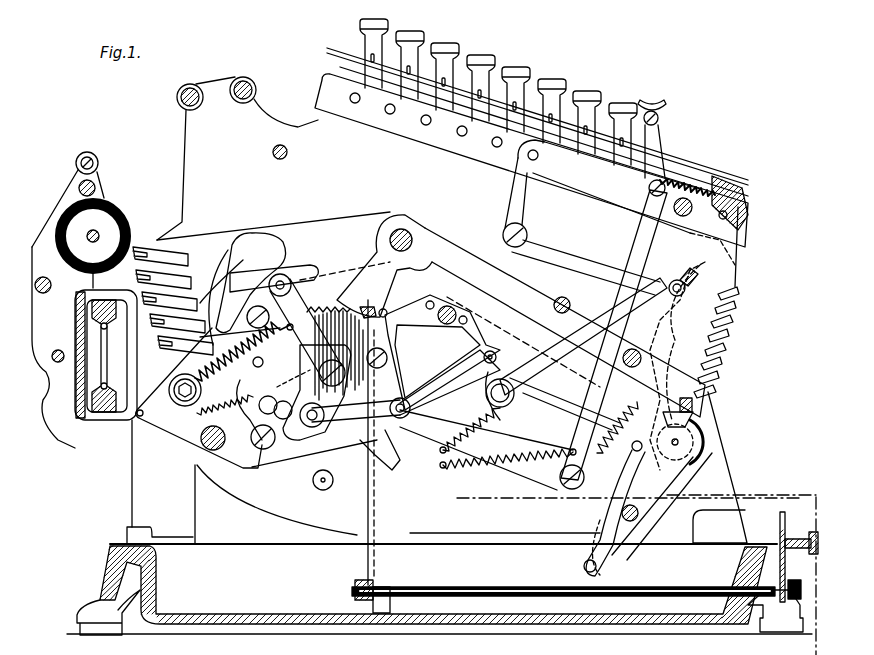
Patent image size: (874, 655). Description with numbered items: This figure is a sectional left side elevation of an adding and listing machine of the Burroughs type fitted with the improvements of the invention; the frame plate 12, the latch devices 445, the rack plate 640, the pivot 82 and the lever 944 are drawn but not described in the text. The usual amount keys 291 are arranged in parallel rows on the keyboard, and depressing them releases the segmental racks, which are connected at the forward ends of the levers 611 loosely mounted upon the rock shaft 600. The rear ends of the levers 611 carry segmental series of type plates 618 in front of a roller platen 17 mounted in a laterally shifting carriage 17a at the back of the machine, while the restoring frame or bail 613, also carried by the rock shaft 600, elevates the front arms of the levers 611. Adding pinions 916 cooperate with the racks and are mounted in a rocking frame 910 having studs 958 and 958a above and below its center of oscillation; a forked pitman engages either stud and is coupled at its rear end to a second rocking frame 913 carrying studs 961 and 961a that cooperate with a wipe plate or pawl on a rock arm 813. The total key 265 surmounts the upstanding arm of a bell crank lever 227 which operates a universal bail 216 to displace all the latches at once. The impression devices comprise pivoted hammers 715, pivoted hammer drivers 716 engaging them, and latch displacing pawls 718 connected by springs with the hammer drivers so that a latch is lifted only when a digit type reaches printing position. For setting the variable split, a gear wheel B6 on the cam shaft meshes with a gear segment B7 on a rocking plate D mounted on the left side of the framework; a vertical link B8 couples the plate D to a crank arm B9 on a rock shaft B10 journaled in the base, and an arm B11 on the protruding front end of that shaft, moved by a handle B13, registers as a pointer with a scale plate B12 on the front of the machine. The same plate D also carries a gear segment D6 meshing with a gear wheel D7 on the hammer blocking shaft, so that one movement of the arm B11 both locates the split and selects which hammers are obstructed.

The keyboard bar / frame plate 12 is at (375, 212).
The roller platen 17 is at (112, 210).
The laterally shifting carriage 17a is at (75, 400).
The pivot 82 is at (492, 380).
The universal bail 216 is at (594, 258).
The bell crank lever 227 is at (533, 190).
The total key 265 is at (658, 112).
The amount keys 291 is at (590, 97).
The rack segment 445 is at (741, 216).
The rock shaft 600 is at (392, 214).
The levers 611 is at (318, 222).
The restoring frame or bail 613 is at (543, 390).
The type plates 618 is at (146, 250).
The rack plate 640 is at (735, 260).
The hammers 715 is at (286, 262).
The hammer drivers 716 is at (293, 458).
The latch displacing pawls 718 is at (308, 274).
The rock arm 813 is at (453, 470).
The rocking frame 910 is at (663, 478).
The rocking frame 913 is at (425, 393).
The adding pinions 916 is at (703, 424).
The lever 944 is at (620, 343).
The stud 958 is at (637, 450).
The stud 958a is at (597, 567).
The stud 961 is at (388, 318).
The stud 961a is at (496, 358).
The gear wheel B6 is at (364, 308).
The gear segment B7 is at (335, 353).
The vertical link B8 is at (368, 483).
The crank arm B9 is at (375, 568).
The rock shaft B10 is at (535, 587).
The arm B11 is at (807, 576).
The scale plate B12 is at (781, 520).
The handle B13 is at (804, 532).
The rocking plate D is at (333, 355).
The gear segment D6 is at (416, 379).
The gear wheel D7 is at (400, 438).